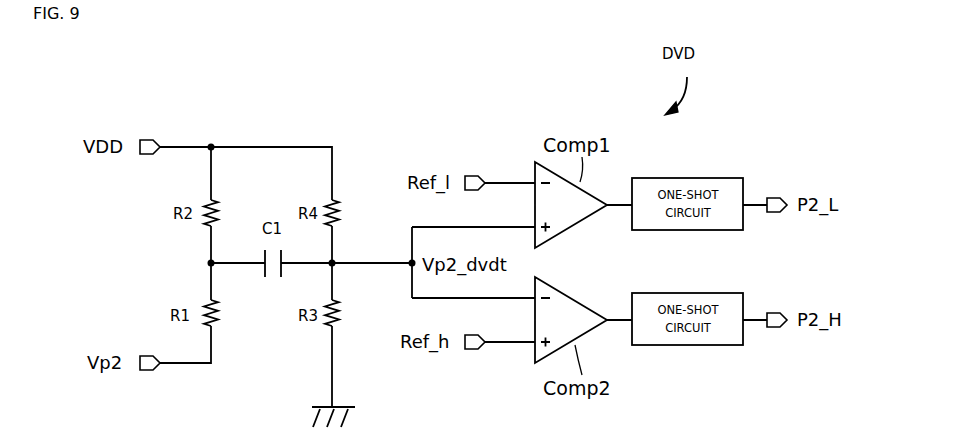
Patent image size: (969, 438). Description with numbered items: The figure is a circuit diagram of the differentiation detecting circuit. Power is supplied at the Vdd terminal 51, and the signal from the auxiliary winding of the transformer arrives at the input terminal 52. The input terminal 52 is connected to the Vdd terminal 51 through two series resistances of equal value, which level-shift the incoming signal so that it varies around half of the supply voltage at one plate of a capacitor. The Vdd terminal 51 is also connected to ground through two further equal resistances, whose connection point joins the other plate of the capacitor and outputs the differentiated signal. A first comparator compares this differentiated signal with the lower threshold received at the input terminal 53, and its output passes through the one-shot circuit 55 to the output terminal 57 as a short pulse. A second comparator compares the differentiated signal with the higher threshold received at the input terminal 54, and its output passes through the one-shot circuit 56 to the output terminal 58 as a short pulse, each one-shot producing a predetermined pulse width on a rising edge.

The Vdd terminal 51 is at (150, 140).
The input terminal 52 is at (149, 356).
The input terminal 53 is at (470, 176).
The input terminal 54 is at (470, 350).
The one-shot circuit 55 is at (707, 178).
The one-shot circuit 56 is at (683, 293).
The output terminal 57 is at (775, 198).
The output terminal 58 is at (775, 313).